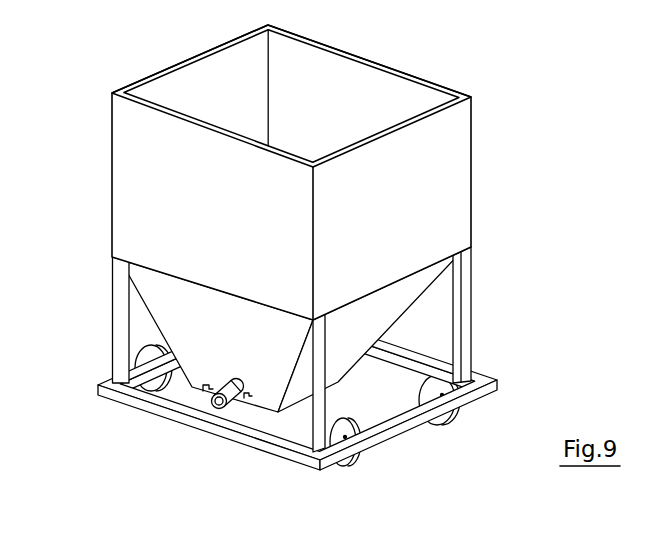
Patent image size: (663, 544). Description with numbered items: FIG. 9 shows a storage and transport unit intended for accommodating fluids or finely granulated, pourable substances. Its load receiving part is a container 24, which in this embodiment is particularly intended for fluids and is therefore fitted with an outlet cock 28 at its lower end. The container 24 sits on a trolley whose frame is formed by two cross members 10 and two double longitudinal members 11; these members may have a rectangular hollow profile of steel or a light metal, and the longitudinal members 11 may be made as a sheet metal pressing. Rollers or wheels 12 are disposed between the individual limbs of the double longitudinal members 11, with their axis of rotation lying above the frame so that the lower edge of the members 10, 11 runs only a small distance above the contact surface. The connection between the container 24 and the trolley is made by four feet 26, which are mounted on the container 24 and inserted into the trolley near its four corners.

The cross member 10 is at (245, 437).
The double longitudinal member 11 is at (420, 420).
The wheel 12 is at (345, 437).
The container 24 is at (308, 238).
The foot 26 is at (120, 323).
The outlet cock 28 is at (215, 398).